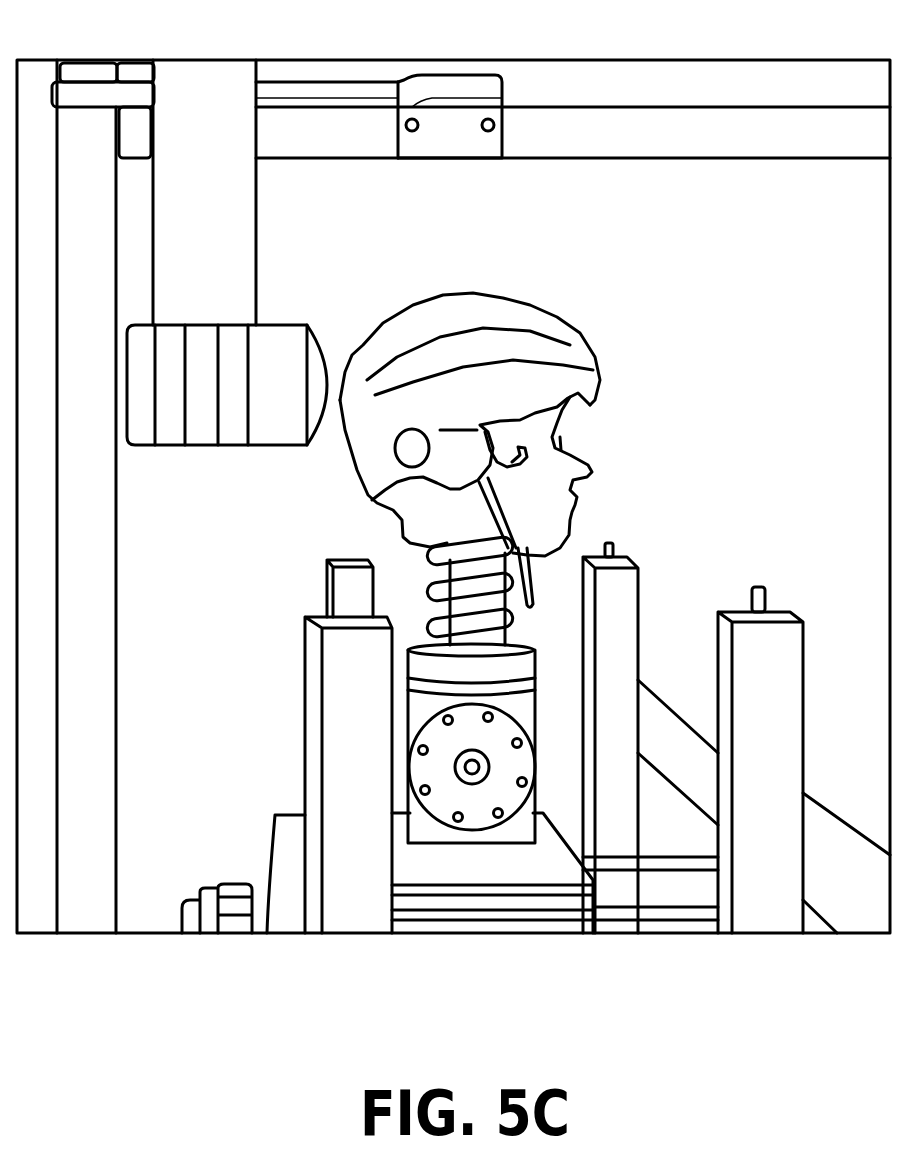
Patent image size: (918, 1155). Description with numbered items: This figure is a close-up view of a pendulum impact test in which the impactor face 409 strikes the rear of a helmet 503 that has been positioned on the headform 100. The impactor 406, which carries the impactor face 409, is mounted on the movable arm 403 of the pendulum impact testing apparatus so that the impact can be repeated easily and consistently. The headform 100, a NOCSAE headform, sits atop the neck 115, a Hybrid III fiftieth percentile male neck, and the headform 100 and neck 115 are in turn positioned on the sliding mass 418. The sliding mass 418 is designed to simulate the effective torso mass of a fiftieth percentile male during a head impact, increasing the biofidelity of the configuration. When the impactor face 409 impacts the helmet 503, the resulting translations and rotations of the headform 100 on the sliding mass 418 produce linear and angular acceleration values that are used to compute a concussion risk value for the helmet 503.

The helmet 503 is at (493, 297).
The movable arm 403 is at (258, 290).
The impactor 406 is at (280, 447).
The impactor face 409 is at (318, 447).
The headform 100 is at (573, 535).
The neck 115 is at (480, 560).
The sliding mass 418 is at (488, 815).